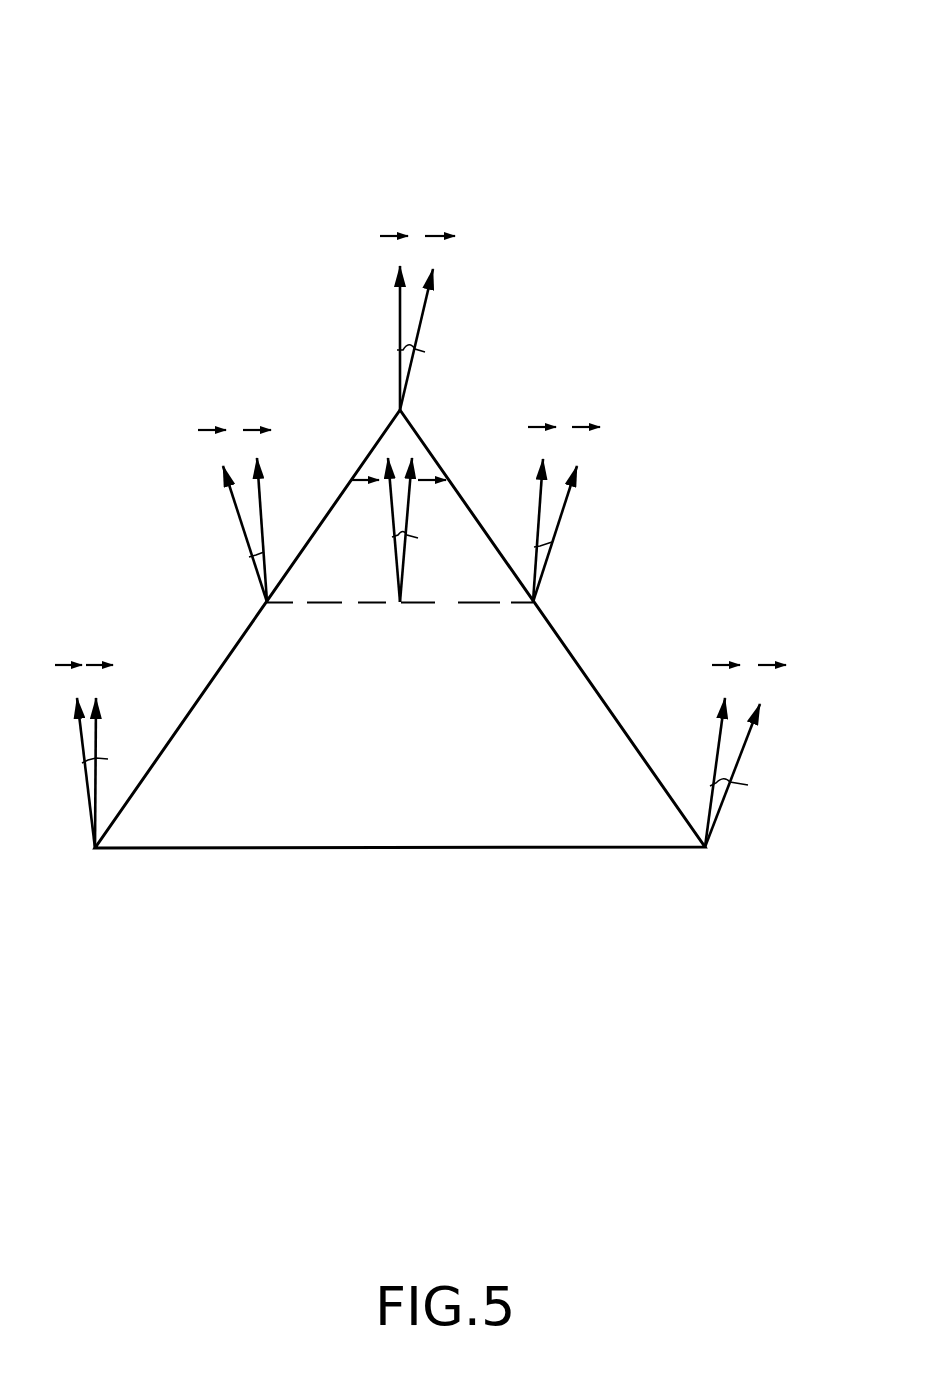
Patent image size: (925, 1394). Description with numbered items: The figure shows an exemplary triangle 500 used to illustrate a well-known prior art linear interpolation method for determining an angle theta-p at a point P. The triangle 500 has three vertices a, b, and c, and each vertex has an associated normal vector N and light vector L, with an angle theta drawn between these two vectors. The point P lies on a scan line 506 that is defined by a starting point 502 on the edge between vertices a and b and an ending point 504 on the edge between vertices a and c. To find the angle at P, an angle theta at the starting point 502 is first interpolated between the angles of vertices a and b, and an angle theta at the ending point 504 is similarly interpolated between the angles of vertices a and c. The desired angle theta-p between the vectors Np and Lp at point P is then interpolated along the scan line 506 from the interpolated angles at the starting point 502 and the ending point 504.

The triangle 500 is at (29, 21).
The starting point 502 is at (268, 604).
The ending point 504 is at (533, 605).
The scan line 506 is at (312, 603).